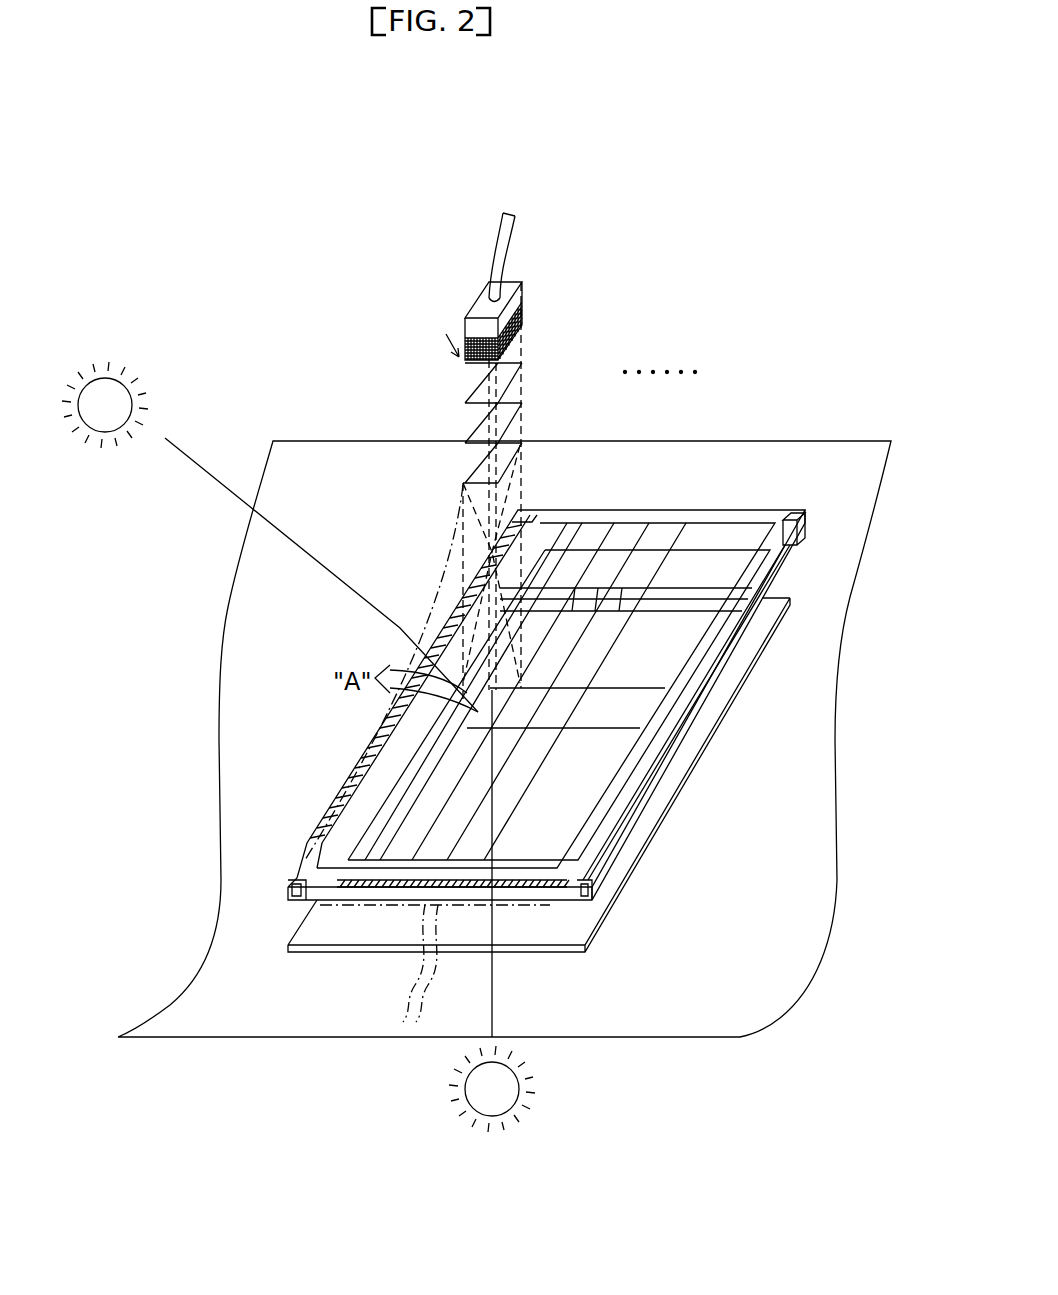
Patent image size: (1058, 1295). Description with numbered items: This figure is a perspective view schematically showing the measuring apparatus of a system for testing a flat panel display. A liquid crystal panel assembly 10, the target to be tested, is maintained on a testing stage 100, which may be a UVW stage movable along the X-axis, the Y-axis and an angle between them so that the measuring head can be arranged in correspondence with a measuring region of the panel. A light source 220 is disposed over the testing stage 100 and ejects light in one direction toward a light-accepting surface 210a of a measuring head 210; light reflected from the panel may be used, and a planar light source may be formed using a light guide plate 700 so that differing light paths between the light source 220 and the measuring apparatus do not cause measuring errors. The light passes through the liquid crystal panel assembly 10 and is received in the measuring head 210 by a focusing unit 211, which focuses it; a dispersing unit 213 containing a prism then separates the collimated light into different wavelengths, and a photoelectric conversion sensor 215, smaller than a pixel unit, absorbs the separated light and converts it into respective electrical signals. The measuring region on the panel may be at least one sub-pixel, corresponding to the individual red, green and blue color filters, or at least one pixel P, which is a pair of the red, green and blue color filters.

The liquid crystal panel assembly 10 is at (661, 859).
The testing stage 100 is at (687, 1022).
The measuring head 210 is at (501, 536).
The light-accepting surface 210a is at (480, 472).
The focusing unit 211 is at (480, 427).
The dispersing unit 213 is at (480, 385).
The photoelectric conversion sensor 215 is at (523, 310).
The light source 220 is at (122, 424).
The light guide plate 700 is at (563, 961).
The pixel P is at (578, 545).